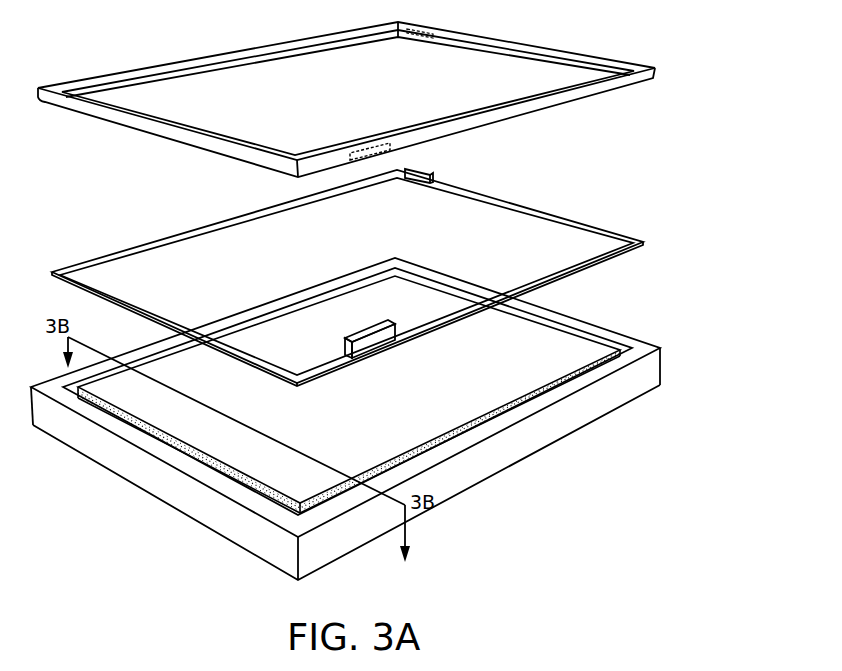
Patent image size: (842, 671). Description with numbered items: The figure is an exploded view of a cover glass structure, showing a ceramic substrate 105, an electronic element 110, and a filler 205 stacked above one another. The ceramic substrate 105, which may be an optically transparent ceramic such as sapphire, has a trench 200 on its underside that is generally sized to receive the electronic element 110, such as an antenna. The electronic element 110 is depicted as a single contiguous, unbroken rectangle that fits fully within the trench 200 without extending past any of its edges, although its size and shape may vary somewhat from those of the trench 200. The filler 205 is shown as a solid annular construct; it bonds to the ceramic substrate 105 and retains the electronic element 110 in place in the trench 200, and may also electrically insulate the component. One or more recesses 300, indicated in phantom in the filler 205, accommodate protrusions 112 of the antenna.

The filler 205 is at (503, 40).
The recess 300 is at (368, 163).
The electronic element 110 is at (640, 232).
The protrusion 112 is at (365, 345).
The ceramic substrate 105 is at (663, 385).
The trench 200 is at (625, 344).